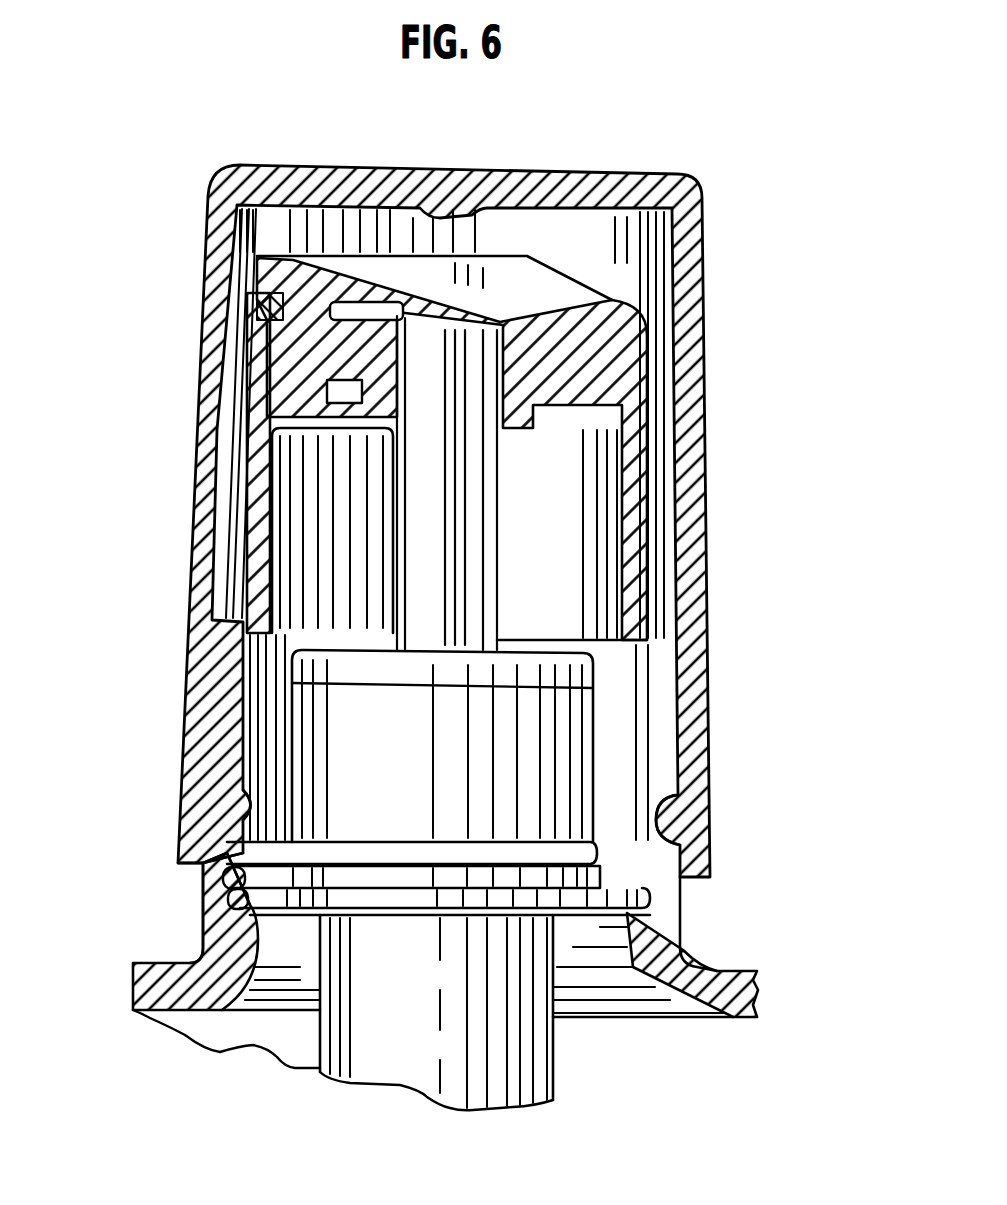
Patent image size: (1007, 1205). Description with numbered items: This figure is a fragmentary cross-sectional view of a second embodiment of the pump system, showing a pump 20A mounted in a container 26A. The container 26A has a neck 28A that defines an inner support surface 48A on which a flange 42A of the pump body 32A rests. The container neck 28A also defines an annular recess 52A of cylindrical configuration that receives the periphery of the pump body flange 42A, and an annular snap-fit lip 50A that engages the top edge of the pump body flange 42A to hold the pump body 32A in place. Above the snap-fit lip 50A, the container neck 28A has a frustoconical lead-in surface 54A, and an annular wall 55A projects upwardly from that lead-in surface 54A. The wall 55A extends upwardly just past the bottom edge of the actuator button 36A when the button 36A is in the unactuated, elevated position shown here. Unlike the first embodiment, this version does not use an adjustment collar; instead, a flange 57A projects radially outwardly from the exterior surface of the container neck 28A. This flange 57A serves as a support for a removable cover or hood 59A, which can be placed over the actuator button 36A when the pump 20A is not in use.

The pump 20A is at (620, 296).
The container 26A is at (742, 962).
The container neck 28A is at (683, 895).
The pump body 32A is at (602, 712).
The actuator button 36A is at (632, 362).
The pump body flange 42A is at (600, 907).
The inner support surface 48A is at (640, 900).
The annular snap-fit lip 50A is at (710, 793).
The annular recess 52A is at (203, 880).
The frustoconical lead-in surface 54A is at (247, 803).
The annular wall 55A is at (680, 743).
The flange 57A is at (180, 850).
The removable cover or hood 59A is at (187, 653).